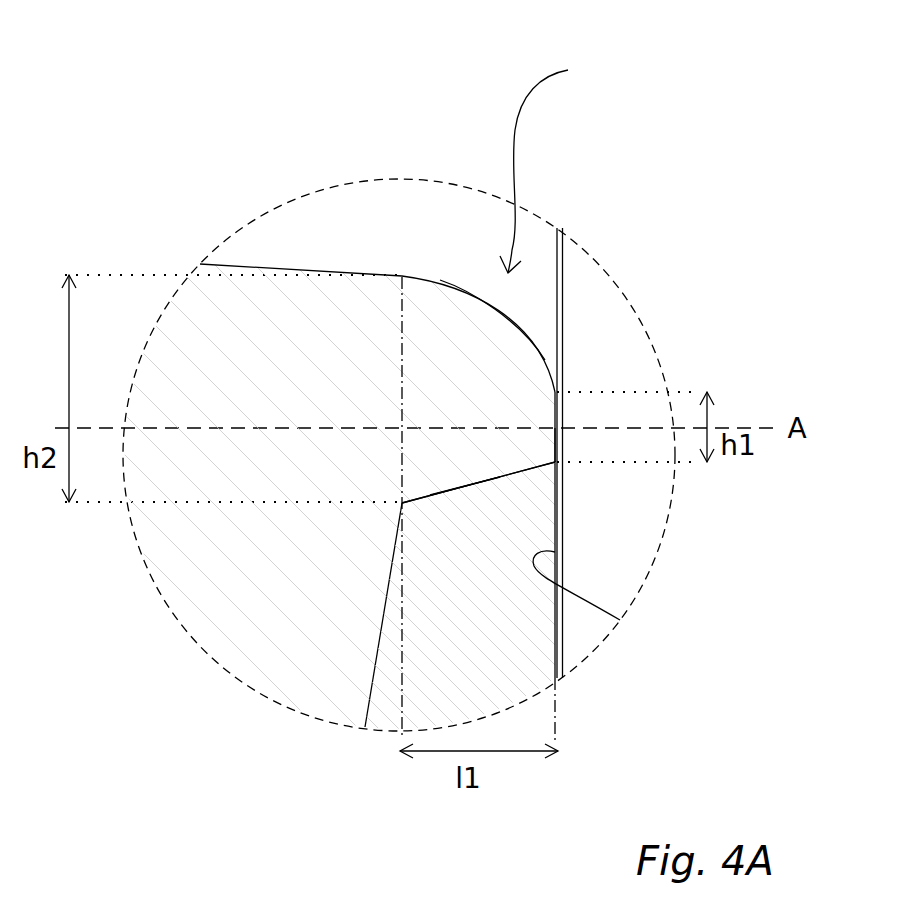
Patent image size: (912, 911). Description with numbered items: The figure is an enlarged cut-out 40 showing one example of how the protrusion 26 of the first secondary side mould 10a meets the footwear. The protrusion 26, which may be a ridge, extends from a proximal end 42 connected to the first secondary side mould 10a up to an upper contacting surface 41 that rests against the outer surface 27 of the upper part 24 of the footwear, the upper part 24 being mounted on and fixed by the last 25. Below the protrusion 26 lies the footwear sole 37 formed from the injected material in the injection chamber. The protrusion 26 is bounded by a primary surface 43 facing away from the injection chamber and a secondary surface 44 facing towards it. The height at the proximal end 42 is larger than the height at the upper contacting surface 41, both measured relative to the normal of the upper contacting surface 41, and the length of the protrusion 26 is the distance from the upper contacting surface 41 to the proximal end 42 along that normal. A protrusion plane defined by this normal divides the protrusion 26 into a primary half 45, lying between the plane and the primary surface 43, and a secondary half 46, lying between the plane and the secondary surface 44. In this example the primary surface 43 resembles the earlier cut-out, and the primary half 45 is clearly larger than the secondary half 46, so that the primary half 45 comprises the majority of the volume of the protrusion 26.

The cut-out 40 is at (278, 205).
The first secondary side mould 10a is at (456, 455).
The primary half 45 is at (446, 378).
The secondary half 46 is at (446, 470).
The footwear sole 37 is at (462, 698).
The upper part 24 is at (565, 362).
The last 25 is at (607, 552).
The protrusion 26 is at (555, 164).
The outer surface 27 is at (620, 620).
The upper contacting surface 41 is at (563, 442).
The proximal end 42 is at (400, 392).
The primary surface 43 is at (467, 293).
The secondary surface 44 is at (463, 488).